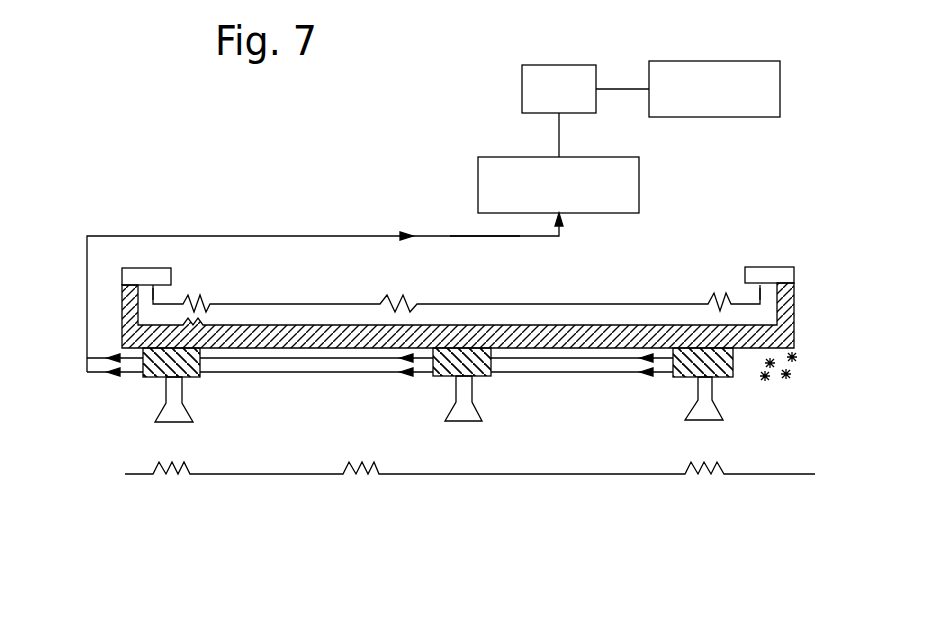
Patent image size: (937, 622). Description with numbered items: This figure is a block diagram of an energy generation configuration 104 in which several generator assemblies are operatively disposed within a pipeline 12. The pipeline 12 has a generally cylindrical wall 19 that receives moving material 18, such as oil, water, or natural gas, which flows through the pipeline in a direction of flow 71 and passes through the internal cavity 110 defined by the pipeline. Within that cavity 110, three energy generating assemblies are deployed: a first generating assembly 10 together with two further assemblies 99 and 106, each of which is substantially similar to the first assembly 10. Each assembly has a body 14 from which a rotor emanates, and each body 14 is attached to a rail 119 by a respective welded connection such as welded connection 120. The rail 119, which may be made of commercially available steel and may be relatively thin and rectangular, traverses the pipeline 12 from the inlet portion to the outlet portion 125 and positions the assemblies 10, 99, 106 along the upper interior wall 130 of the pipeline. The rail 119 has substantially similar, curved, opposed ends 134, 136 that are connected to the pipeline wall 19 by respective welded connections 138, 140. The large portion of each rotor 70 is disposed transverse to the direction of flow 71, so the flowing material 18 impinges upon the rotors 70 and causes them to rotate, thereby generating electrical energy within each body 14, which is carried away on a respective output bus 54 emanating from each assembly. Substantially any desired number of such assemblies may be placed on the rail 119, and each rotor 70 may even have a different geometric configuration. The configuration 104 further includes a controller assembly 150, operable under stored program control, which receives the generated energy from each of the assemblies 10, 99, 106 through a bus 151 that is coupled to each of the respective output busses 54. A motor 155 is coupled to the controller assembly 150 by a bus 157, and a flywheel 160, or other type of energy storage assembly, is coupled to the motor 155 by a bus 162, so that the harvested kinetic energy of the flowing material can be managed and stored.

The generator assembly 10 is at (225, 386).
The pipeline 12 is at (215, 496).
The body 14 is at (200, 362).
The moving material 18 is at (797, 360).
The wall 19 is at (537, 317).
The output bus 54 is at (138, 388).
The rotor 70 is at (157, 408).
The direction of flow 71 is at (810, 420).
The energy generating assembly 99 is at (500, 392).
The energy generation configuration 104 is at (172, 225).
The energy generating assembly 106 is at (642, 400).
The internal cavity 110 is at (345, 449).
The rail 119 is at (313, 333).
The welded connection 120 is at (185, 378).
The outlet portion 125 is at (93, 443).
The upper interior wall 130 is at (345, 350).
The curved end 134 is at (122, 268).
The curved end 136 is at (775, 267).
The welded connection 138 is at (170, 288).
The welded connection 140 is at (760, 290).
The controller assembly 150 is at (478, 185).
The bus 151 is at (498, 238).
The motor 155 is at (522, 90).
The bus 157 is at (559, 130).
The flywheel 160 is at (716, 117).
The bus 162 is at (617, 88).